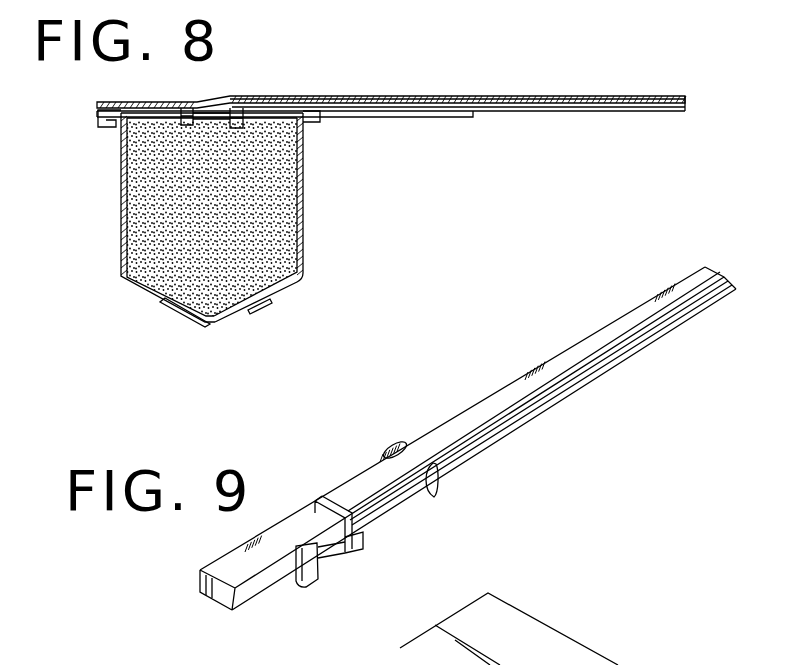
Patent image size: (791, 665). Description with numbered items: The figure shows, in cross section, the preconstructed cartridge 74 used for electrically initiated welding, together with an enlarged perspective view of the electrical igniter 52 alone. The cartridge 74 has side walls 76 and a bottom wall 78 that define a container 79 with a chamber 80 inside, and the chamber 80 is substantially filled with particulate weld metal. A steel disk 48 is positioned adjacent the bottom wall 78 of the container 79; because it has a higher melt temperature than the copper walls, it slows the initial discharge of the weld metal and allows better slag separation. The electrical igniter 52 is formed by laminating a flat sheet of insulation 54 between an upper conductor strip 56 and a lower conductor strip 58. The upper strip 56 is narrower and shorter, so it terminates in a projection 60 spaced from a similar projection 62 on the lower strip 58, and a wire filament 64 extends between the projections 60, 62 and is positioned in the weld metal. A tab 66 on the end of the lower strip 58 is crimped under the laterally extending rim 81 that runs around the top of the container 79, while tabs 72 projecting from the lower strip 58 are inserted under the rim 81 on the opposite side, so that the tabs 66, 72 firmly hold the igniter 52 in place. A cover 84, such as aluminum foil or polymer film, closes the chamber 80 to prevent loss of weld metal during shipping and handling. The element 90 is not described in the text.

In FIG. 8, the steel disk 48 is at (252, 306).
In FIG. 8, the electrical igniter 52 is at (375, 107).
In FIG. 9, the electrical igniter 52 is at (448, 445).
In FIG. 8, the sheet of insulation 54 is at (485, 105).
In FIG. 9, the sheet of insulation 54 is at (510, 416).
In FIG. 8, the upper conductor strip 56 is at (440, 98).
In FIG. 9, the upper conductor strip 56 is at (563, 360).
In FIG. 8, the lower conductor strip 58 is at (505, 120).
In FIG. 9, the lower conductor strip 58 is at (297, 525).
In FIG. 9, the projection 60 is at (362, 548).
In FIG. 9, the projection 62 is at (316, 590).
In FIG. 9, the wire filament 64 is at (340, 572).
In FIG. 8, the tab 66 is at (104, 130).
In FIG. 9, the tab 66 is at (213, 590).
In FIG. 8, the tabs 72 is at (318, 121).
In FIG. 9, the tabs 72 is at (440, 492).
In FIG. 8, the cartridge 74 is at (234, 231).
In FIG. 8, the side walls 76 is at (120, 208).
In FIG. 8, the bottom wall 78 is at (148, 295).
In FIG. 8, the container 79 is at (305, 197).
In FIG. 8, the chamber 80 is at (166, 255).
In FIG. 8, the rim 81 is at (118, 105).
In FIG. 8, the cover 84 is at (230, 97).
In FIG. 9, the housing 90 is at (620, 664).